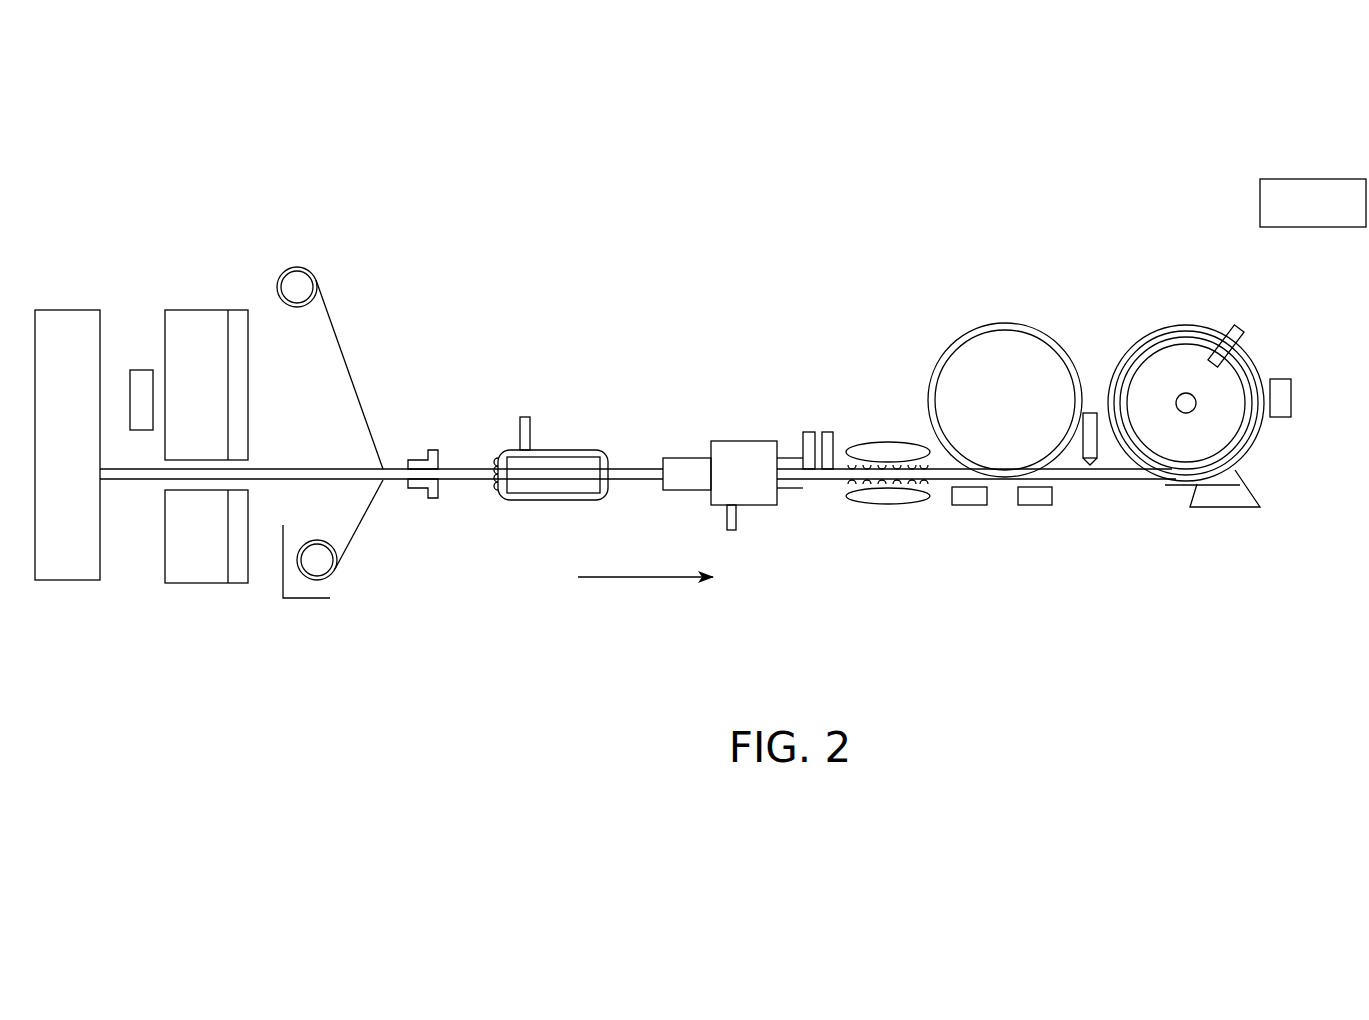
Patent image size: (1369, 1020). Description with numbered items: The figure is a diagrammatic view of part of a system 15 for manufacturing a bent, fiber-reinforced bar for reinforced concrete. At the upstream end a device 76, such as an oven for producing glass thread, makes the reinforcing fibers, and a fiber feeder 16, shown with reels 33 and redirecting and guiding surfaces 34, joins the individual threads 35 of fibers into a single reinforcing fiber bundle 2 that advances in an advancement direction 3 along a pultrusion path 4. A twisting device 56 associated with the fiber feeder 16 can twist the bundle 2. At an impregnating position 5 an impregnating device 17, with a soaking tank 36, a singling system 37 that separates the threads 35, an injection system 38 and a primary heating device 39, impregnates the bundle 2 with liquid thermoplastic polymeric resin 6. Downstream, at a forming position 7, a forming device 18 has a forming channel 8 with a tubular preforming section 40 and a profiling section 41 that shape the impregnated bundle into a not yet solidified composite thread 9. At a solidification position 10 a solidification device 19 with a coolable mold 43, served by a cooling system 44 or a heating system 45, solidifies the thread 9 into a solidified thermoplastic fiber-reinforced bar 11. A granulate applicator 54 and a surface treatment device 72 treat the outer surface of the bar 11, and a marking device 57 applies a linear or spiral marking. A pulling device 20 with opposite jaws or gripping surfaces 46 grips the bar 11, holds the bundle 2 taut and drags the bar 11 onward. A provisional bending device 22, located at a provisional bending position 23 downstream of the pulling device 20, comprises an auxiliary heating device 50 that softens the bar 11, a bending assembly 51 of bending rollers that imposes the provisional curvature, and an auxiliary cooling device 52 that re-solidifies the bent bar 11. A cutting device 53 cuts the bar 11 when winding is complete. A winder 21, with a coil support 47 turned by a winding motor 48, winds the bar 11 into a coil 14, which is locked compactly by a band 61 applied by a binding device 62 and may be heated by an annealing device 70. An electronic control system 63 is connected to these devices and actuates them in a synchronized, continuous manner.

The reinforcing fiber bundle 2 is at (355, 357).
The advancement direction 3 is at (633, 577).
The pultrusion path 4 is at (446, 469).
The impregnating position 5 is at (526, 488).
The liquid thermoplastic polymeric resin 6 is at (580, 465).
The forming position 7 is at (736, 457).
The forming channel 8 is at (736, 457).
The composite thread 9 is at (628, 468).
The solidification position 10 is at (769, 470).
The solidified fiber-reinforced bar 11 is at (831, 482).
The coil 14 is at (1209, 353).
The system for manufacturing a reinforcing element 15 is at (277, 210).
The fiber feeder 16 is at (277, 383).
The impregnating device 17 is at (526, 493).
The forming device 18 is at (736, 457).
The solidification device 19 is at (769, 470).
The pulling device 20 is at (886, 442).
The winder 21 is at (1209, 374).
The provisional bending device 22 is at (1005, 364).
The provisional bending position 23 is at (1005, 364).
The reel 33 is at (314, 290).
The redirecting and guiding surface 34 is at (418, 460).
The thread of fibers 35 is at (446, 482).
The soaking tank 36 is at (526, 503).
The singling system 37 is at (495, 487).
The injection system 38 is at (512, 390).
The primary heating device 39 is at (527, 415).
The tubular preforming section 40 is at (687, 488).
The profiling section 41 is at (787, 489).
The coolable mold 43 is at (761, 505).
The cooling system 44 is at (705, 575).
The heating system 45 is at (736, 530).
The jaws or gripping surfaces 46 is at (907, 483).
The coil support 47 is at (1235, 490).
The winding motor 48 is at (1185, 393).
The auxiliary heating device 50 is at (975, 505).
The bending assembly 51 is at (970, 373).
The auxiliary cooling device 52 is at (1035, 505).
The cutting device 53 is at (1093, 413).
The granulate applicator 54 is at (818, 345).
The twisting device 56 is at (281, 585).
The marking device 57 is at (828, 430).
The band 61 is at (1237, 330).
The binding device 62 is at (1292, 395).
The electronic control system 63 is at (140, 380).
The annealing device 70 is at (1285, 180).
The surface treatment device 72 is at (811, 430).
The fiber production device 76 is at (63, 323).